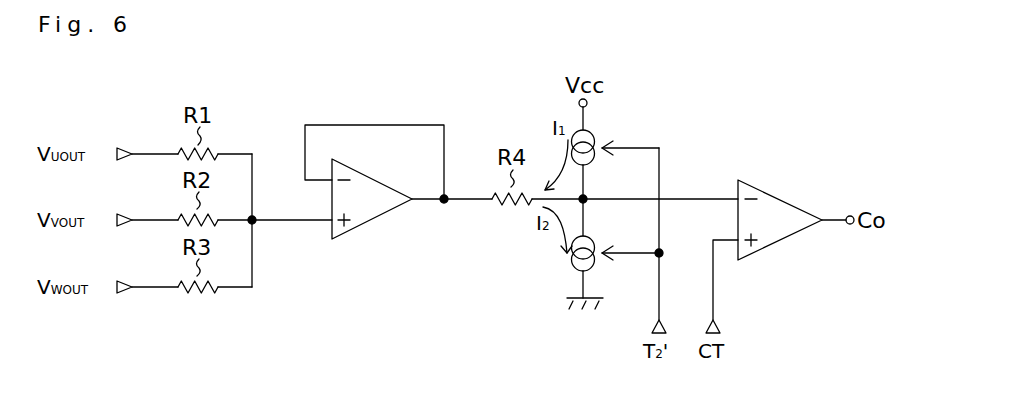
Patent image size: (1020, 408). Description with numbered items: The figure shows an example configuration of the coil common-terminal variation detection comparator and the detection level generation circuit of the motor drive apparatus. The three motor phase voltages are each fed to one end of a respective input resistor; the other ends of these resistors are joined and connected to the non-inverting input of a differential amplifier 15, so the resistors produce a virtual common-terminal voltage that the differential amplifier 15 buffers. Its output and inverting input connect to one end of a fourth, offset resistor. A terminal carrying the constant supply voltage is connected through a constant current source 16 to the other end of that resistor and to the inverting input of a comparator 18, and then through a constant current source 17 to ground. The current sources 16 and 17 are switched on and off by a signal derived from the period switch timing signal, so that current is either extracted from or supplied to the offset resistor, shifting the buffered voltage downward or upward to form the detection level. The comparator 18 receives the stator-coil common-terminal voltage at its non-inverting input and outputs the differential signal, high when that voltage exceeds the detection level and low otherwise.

The differential amplifier 15 is at (368, 224).
The constant current source 16 is at (606, 124).
The constant current source 17 is at (606, 229).
The comparator 18 is at (783, 240).